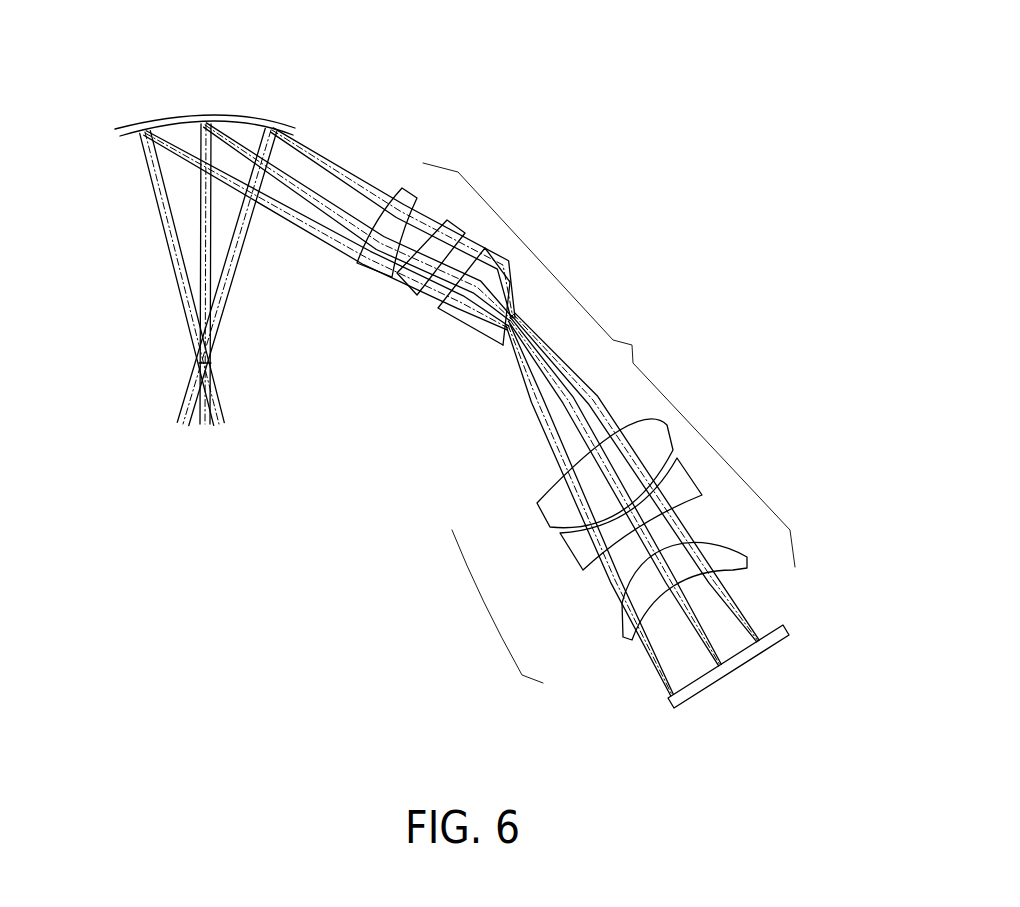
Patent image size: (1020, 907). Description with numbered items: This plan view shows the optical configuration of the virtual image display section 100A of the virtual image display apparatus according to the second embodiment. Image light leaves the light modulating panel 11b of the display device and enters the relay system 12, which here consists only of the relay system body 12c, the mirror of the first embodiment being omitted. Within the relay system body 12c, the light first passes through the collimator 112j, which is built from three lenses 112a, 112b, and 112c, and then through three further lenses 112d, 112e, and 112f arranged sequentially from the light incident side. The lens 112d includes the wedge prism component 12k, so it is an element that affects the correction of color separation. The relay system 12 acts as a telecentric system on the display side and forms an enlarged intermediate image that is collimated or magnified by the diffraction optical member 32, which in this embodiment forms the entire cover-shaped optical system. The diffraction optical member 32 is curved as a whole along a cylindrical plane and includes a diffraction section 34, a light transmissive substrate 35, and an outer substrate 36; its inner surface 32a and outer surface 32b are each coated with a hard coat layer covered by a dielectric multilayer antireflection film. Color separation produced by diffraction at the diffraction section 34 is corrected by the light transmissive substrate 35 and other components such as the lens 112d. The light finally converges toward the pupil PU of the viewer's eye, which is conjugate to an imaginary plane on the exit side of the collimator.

The virtual image display section 100A is at (474, 97).
The diffraction optical member 32 is at (292, 92).
The inner surface 32a is at (157, 152).
The outer surface 32b is at (157, 117).
The diffraction section 34 is at (252, 120).
The light transmissive substrate 35 is at (180, 118).
The outer substrate 36 is at (215, 113).
The pupil PU is at (183, 363).
The relay system 12 is at (744, 333).
The relay system body 12c is at (556, 365).
The wedge prism component 12k is at (493, 347).
The lens 112f is at (377, 265).
The lens 112e is at (403, 285).
The lens 112d is at (463, 315).
The collimator 112j is at (581, 551).
The lens 112c is at (553, 510).
The lens 112b is at (578, 550).
The lens 112a is at (622, 632).
The light modulating panel 11b is at (788, 632).